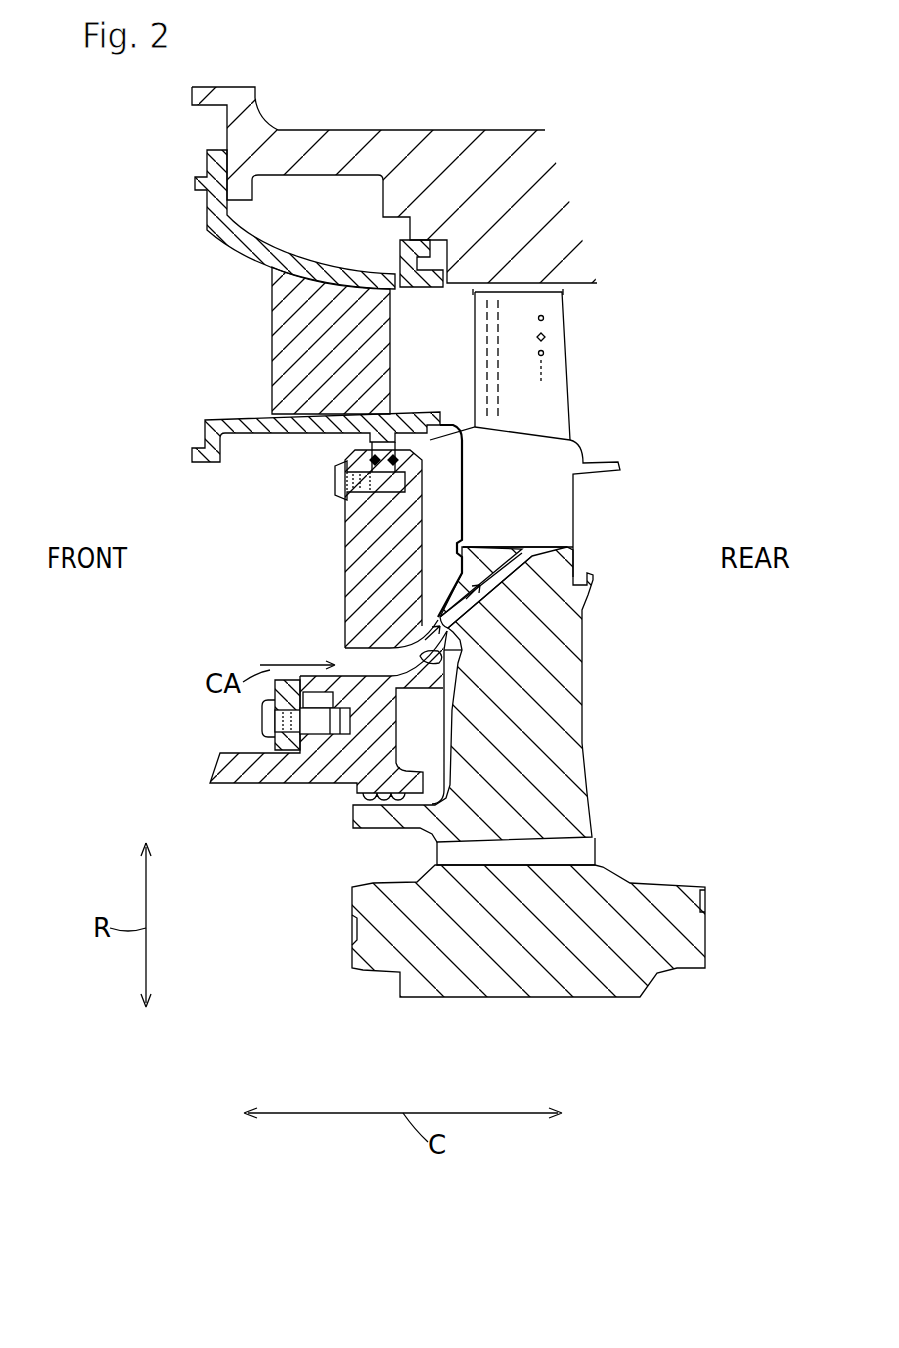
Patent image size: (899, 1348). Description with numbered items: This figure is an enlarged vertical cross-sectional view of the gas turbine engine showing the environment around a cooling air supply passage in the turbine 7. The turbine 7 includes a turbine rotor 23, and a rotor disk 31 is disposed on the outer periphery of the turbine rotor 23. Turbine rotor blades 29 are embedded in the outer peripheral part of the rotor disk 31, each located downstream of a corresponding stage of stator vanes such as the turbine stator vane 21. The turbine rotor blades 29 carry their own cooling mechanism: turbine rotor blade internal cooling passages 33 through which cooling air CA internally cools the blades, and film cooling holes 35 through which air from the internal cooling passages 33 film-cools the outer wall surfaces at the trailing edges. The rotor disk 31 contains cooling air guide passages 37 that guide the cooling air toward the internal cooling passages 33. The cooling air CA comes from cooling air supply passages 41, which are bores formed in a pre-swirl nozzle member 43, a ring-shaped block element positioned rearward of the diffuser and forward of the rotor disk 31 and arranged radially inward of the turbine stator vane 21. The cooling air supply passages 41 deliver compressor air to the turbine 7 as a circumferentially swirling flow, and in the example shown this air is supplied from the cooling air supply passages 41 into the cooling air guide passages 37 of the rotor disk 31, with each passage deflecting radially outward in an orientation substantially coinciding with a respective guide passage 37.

The turbine 7 is at (650, 219).
The turbine stator vane 21 is at (274, 273).
The turbine rotor 23 is at (678, 968).
The turbine rotor blade 29 is at (565, 306).
The rotor disk 31 is at (577, 666).
The turbine rotor blade internal cooling passage 33 is at (483, 364).
The film cooling hole 35 is at (545, 338).
The cooling air guide passage 37 is at (505, 553).
The cooling air supply passage 41 is at (427, 651).
The pre-swirl nozzle member 43 is at (345, 629).